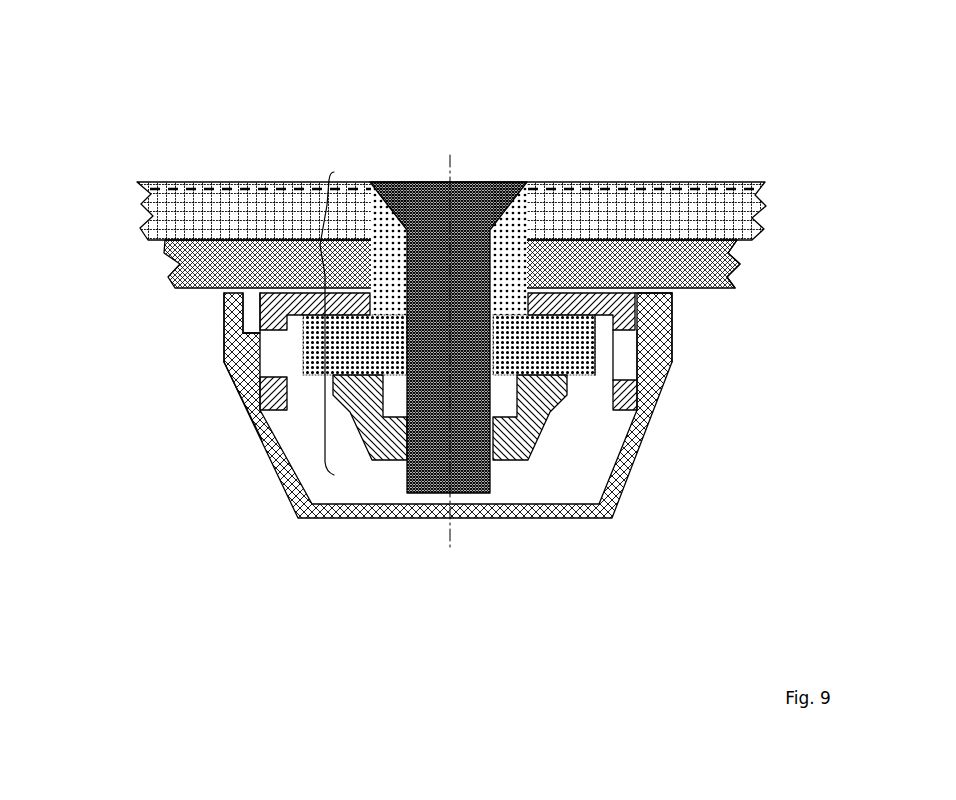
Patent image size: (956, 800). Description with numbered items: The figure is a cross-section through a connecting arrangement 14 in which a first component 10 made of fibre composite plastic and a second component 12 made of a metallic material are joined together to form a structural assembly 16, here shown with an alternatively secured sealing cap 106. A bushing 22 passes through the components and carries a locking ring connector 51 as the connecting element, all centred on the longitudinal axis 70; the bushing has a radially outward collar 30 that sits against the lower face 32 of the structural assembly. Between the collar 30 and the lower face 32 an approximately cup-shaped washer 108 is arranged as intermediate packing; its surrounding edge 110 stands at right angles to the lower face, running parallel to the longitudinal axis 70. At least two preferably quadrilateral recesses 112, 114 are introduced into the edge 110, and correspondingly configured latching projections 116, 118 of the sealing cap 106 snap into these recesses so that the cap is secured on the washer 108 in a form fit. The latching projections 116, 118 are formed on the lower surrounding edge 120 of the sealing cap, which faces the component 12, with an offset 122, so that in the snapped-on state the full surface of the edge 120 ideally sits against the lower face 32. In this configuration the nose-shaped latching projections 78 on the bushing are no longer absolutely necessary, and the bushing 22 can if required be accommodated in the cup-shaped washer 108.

The first component 10 is at (247, 219).
The second component 12 is at (619, 274).
The connecting arrangement 14 is at (412, 122).
The structural assembly 16 is at (115, 240).
The bushing 22 is at (521, 344).
The collar 30 is at (583, 342).
The lower face 32 is at (705, 283).
The locking ring connector 51 is at (323, 270).
The longitudinal axis 70 is at (445, 537).
The latching projection 78 is at (240, 392).
The sealing cap 106 is at (280, 482).
The cup-shaped washer 108 is at (575, 290).
The surrounding edge 110 is at (672, 307).
The recess 112 is at (230, 372).
The recess 114 is at (622, 374).
The latching projection 116 is at (225, 356).
The latching projection 118 is at (600, 357).
The lower surrounding edge 120 is at (655, 305).
The offset 122 is at (243, 307).